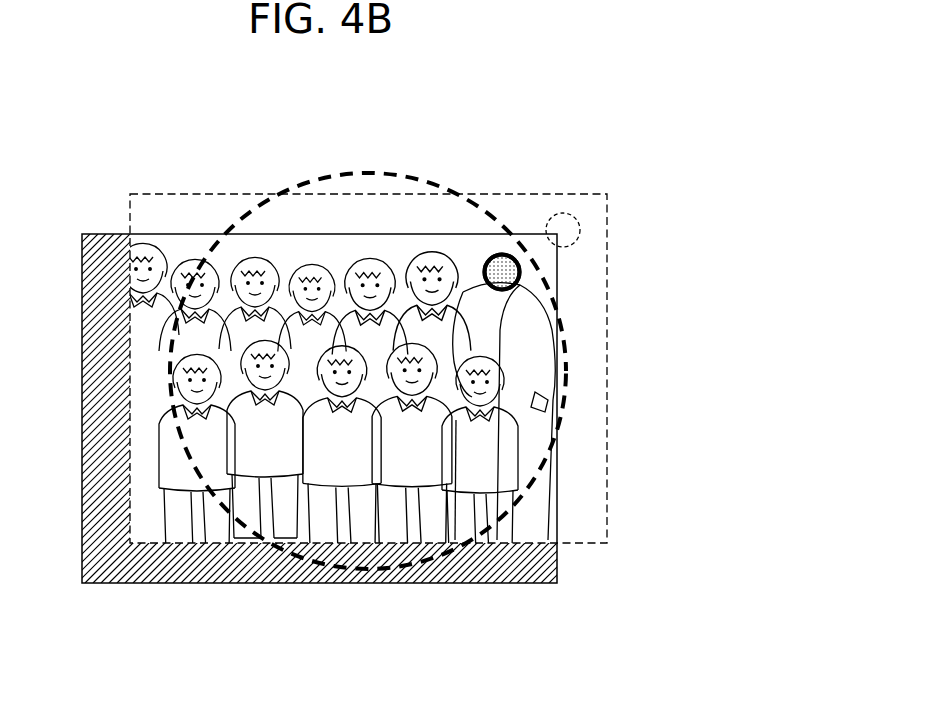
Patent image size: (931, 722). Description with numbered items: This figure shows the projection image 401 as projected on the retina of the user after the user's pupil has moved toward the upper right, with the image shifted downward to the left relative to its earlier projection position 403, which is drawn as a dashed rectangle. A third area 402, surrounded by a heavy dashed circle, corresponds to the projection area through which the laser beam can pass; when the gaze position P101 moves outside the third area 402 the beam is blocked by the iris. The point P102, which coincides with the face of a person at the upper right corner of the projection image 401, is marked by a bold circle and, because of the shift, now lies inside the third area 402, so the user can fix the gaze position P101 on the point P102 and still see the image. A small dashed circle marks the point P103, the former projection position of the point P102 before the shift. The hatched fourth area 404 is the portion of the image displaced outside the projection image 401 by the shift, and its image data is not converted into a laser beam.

The projection image 401 is at (168, 262).
The third area 402 is at (318, 175).
The projection position 403 is at (495, 194).
The fourth area 404 is at (103, 568).
The point P103 is at (563, 228).
The gaze position P101 is at (502, 272).
The point P102 is at (443, 453).